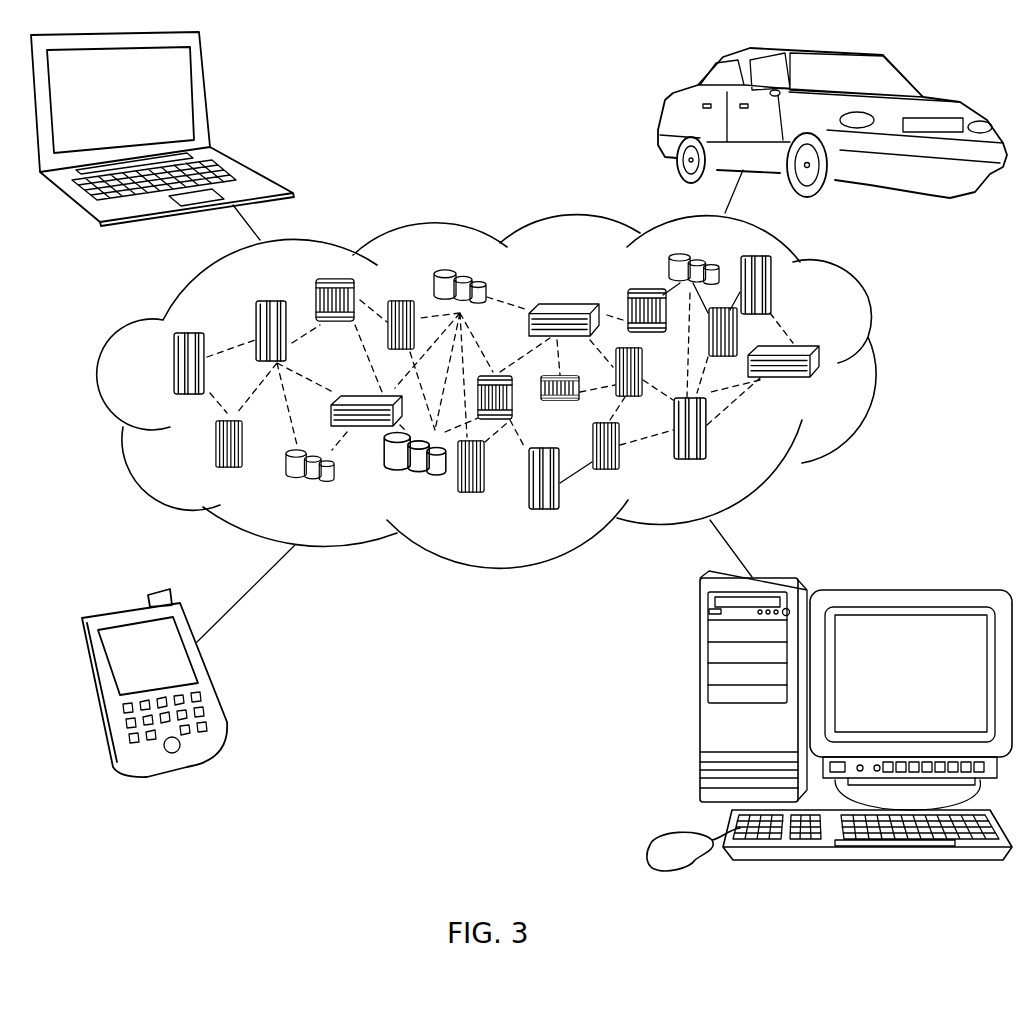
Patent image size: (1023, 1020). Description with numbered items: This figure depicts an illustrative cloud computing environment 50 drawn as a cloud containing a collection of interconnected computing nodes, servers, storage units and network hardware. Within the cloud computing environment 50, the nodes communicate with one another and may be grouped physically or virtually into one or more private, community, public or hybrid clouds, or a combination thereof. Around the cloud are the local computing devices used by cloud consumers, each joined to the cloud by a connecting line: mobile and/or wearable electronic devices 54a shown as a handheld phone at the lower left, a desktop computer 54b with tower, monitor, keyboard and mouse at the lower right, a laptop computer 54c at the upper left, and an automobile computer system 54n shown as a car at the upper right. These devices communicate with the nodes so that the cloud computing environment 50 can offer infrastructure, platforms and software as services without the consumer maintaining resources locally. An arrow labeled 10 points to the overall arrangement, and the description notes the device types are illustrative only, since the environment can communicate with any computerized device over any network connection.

The system 10 is at (837, 387).
The cloud computing environment 50 is at (868, 296).
The mobile and/or wearable electronic devices 54a is at (222, 707).
The desktop computer 54b is at (700, 700).
The laptop computer 54c is at (207, 91).
The automobile computer system 54n is at (673, 95).